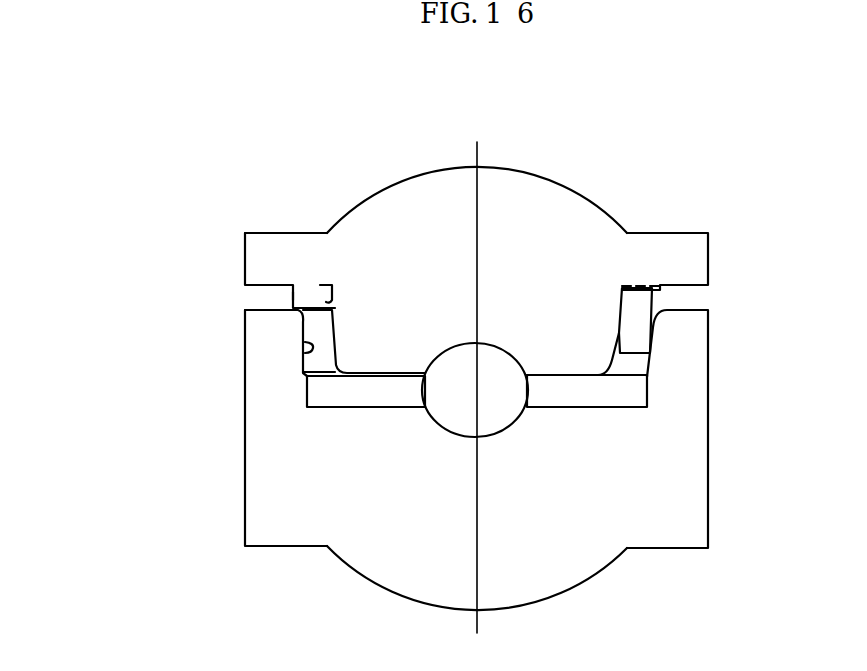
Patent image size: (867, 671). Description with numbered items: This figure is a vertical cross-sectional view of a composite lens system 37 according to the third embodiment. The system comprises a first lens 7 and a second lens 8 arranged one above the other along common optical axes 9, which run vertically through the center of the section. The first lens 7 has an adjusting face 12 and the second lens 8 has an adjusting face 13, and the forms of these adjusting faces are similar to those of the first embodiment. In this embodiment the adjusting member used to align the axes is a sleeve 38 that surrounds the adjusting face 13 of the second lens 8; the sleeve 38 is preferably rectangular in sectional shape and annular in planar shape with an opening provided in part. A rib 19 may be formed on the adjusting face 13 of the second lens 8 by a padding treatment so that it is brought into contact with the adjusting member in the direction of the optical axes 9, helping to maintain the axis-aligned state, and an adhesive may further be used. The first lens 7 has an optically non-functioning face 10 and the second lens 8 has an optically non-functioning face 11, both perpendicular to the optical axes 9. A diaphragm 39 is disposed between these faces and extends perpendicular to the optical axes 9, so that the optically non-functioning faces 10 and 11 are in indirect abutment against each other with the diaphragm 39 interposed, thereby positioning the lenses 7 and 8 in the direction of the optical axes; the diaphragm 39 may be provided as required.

The composite lens system 37 is at (147, 172).
The second lens 8 is at (402, 178).
The first lens 7 is at (377, 583).
The optical axes 9 is at (477, 152).
The adjusting face 13 is at (325, 300).
The rib 19 is at (293, 292).
The sleeve 38 is at (301, 325).
The adjusting face 12 is at (305, 353).
The diaphragm 39 is at (307, 388).
The optically non-functioning face 11 is at (576, 381).
The optically non-functioning face 10 is at (563, 403).